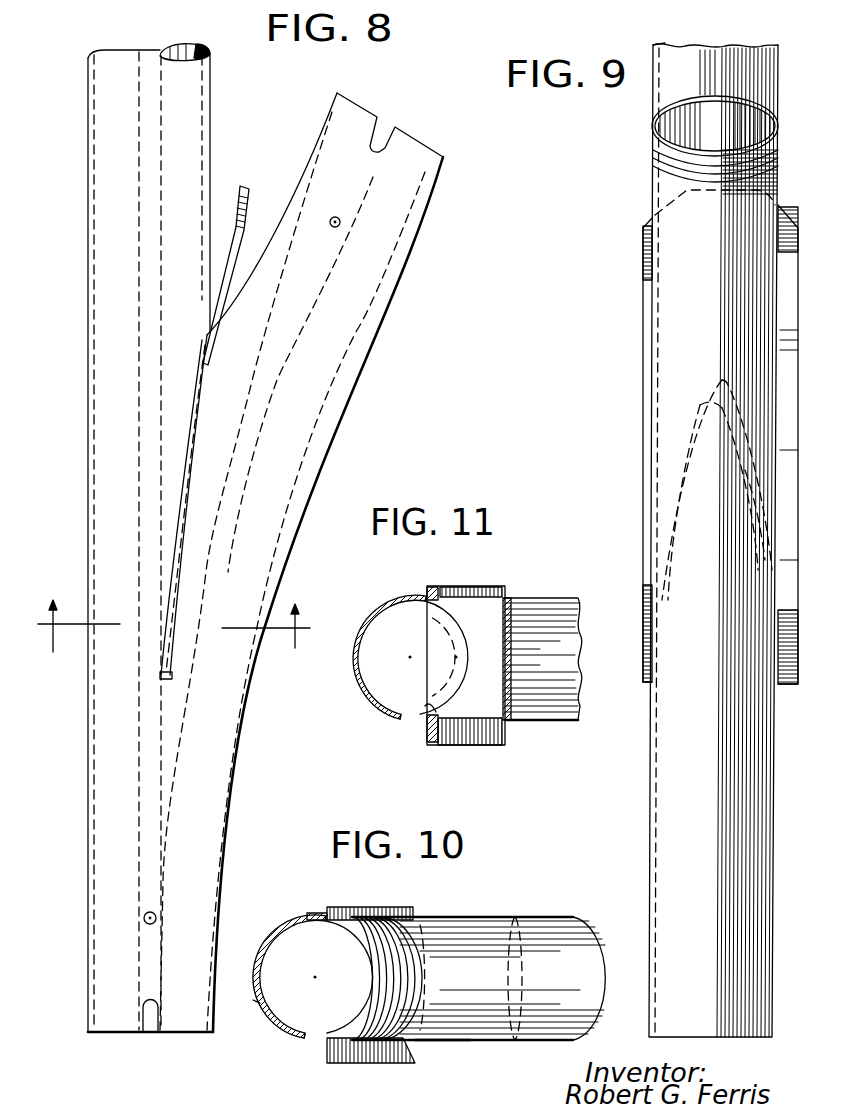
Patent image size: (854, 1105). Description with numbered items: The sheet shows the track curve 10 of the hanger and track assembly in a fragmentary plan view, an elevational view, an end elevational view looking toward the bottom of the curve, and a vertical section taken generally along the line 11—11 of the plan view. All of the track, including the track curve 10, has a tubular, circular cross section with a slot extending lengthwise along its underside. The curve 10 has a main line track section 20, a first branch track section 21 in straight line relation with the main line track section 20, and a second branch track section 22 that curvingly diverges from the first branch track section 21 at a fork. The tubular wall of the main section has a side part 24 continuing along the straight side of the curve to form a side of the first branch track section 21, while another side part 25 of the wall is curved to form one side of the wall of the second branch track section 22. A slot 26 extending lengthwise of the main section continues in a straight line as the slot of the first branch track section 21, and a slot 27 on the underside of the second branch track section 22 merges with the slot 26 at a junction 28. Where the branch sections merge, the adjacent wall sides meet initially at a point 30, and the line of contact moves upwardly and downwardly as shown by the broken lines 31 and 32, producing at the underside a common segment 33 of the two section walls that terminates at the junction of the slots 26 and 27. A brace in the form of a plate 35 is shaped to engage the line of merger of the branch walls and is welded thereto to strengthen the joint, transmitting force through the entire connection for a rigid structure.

In FIG. 8, the track curve 10 is at (322, 431).
In FIG. 9, the track curve 10 is at (645, 323).
In FIG. 8, the section line 11— 11 is at (172, 645).
In FIG. 8, the main line track section 20 is at (98, 1001).
In FIG. 10, the main line track section 20 is at (262, 1004).
In FIG. 8, the first branch track section 21 is at (212, 107).
In FIG. 9, the first branch track section 21 is at (758, 50).
In FIG. 8, the second branch track section 22 is at (411, 229).
In FIG. 9, the second branch track section 22 is at (668, 173).
In FIG. 11, the second branch track section 22 is at (546, 599).
In FIG. 10, the second branch track section 22 is at (580, 947).
In FIG. 8, the side part of the wall 24 is at (88, 896).
In FIG. 11, the side part of the wall 24 is at (360, 626).
In FIG. 10, the side part of the wall 24 is at (268, 935).
In FIG. 8, the side part of the wall 25 is at (213, 1034).
In FIG. 11, the side part of the wall 25 is at (556, 720).
In FIG. 10, the side part of the wall 25 is at (490, 930).
In FIG. 8, the slot 26 is at (138, 412).
In FIG. 11, the slot 26 is at (399, 720).
In FIG. 10, the slot 26 is at (305, 1040).
In FIG. 8, the slot 27 is at (373, 177).
In FIG. 9, the slot 27 is at (775, 128).
In FIG. 11, the slot 27 is at (455, 746).
In FIG. 10, the slot 27 is at (482, 1045).
In FIG. 8, the junction 28 is at (164, 678).
In FIG. 9, the junction 28 is at (645, 686).
In FIG. 11, the junction 28 is at (430, 588).
In FIG. 10, the junction 28 is at (330, 910).
In FIG. 8, the merger point 30 is at (206, 368).
In FIG. 9, the merger point 30 is at (724, 382).
In FIG. 9, the broken line 31 is at (678, 460).
In FIG. 9, the broken line 32 is at (753, 492).
In FIG. 11, the common segment 33 is at (427, 722).
In FIG. 8, the plate 35 is at (241, 186).
In FIG. 9, the plate 35 is at (645, 276).
In FIG. 11, the plate 35 is at (470, 587).
In FIG. 10, the plate 35 is at (410, 917).